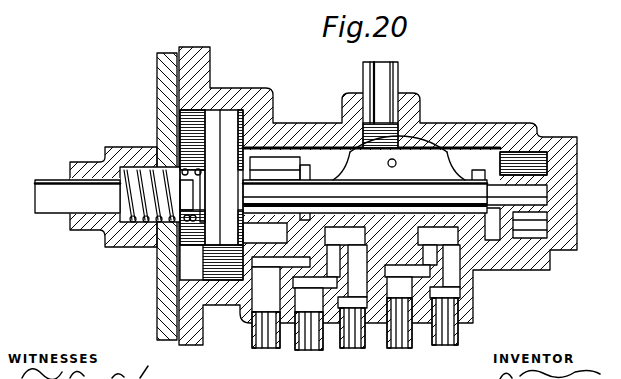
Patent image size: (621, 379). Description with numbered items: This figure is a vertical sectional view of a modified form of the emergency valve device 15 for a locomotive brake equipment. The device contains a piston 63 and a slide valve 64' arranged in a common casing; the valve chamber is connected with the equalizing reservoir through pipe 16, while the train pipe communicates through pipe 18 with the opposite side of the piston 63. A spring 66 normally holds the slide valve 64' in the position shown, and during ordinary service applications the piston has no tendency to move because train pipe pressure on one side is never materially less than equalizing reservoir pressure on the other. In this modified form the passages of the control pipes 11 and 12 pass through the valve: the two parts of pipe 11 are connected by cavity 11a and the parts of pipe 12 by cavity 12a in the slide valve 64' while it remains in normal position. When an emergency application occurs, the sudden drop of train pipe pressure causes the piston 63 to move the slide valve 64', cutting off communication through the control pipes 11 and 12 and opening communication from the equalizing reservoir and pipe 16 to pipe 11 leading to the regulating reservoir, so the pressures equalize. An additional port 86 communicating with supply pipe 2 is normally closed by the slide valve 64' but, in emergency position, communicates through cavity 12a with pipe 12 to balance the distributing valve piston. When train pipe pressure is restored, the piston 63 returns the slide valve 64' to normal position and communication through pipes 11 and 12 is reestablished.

The emergency valve device 15 is at (367, 196).
The pipe 16 is at (387, 80).
The pipe 18 is at (57, 183).
The piston 63 is at (222, 113).
The spring 66 is at (130, 240).
The slide valve 64' is at (399, 180).
The cavity 12a is at (332, 228).
The cavity 11a is at (433, 228).
The additional port 86 is at (280, 260).
The supply pipe 2 is at (273, 343).
The pipe 12 is at (357, 345).
The pipe 11 is at (443, 343).